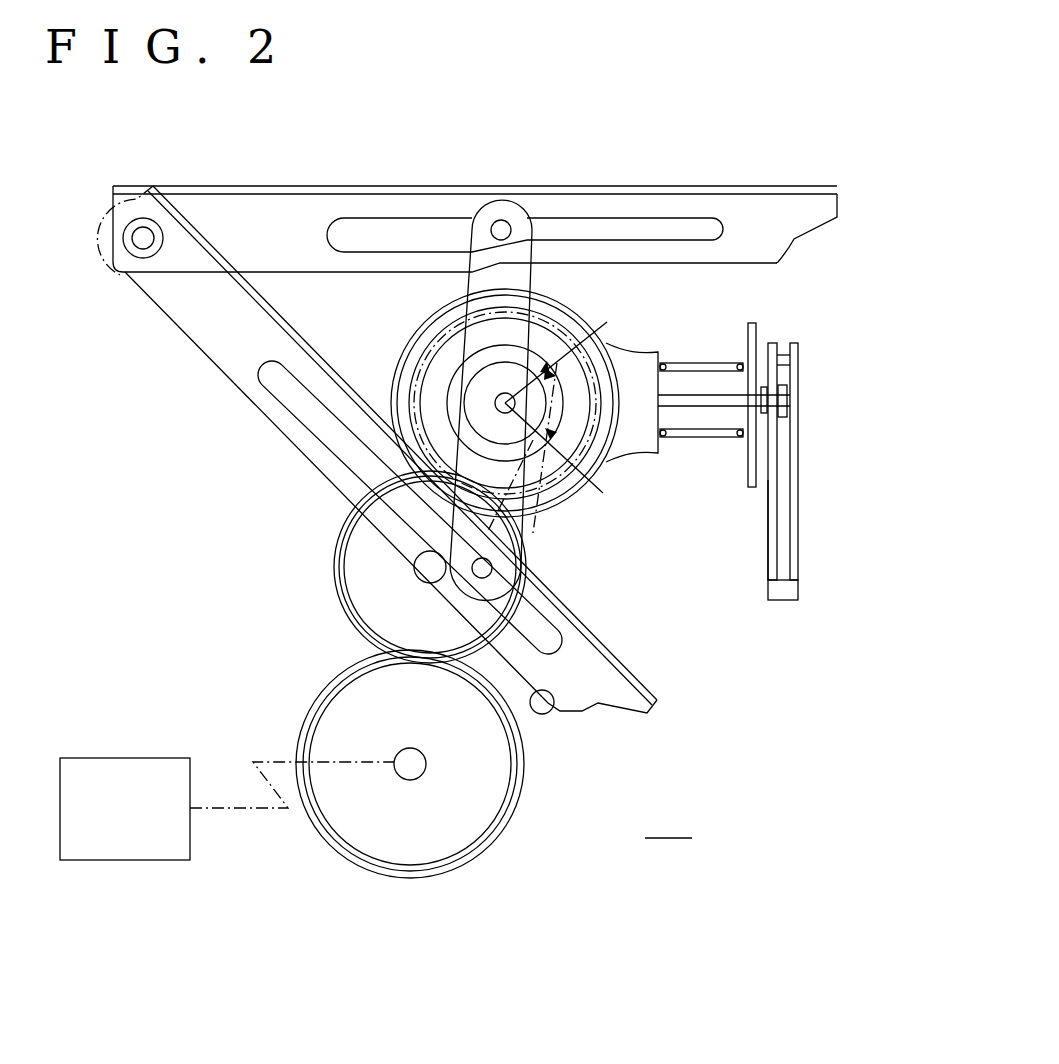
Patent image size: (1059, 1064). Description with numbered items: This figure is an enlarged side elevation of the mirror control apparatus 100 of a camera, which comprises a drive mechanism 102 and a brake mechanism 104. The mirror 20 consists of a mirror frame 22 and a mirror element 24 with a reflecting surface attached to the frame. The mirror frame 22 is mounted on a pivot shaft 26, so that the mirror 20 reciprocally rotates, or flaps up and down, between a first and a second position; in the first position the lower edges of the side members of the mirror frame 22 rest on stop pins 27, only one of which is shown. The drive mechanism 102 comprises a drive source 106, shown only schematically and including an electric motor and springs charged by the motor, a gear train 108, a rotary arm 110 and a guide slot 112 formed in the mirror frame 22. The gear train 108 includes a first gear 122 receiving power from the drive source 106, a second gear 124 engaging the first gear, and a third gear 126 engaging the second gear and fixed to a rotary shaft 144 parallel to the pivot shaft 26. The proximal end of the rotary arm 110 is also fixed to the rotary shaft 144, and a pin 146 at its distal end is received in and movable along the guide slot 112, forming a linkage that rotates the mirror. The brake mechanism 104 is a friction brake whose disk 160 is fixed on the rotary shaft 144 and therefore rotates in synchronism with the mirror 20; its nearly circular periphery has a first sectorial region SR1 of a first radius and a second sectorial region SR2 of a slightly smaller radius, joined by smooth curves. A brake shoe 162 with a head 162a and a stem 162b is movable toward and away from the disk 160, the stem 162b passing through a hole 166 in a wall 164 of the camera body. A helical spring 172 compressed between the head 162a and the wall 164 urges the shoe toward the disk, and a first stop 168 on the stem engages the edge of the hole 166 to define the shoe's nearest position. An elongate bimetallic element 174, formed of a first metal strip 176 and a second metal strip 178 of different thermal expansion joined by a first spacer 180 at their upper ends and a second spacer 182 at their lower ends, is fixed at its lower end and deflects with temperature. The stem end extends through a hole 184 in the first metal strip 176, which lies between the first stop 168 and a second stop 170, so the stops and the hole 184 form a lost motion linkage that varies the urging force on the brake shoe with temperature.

The mirror 20 is at (480, 232).
The mirror frame 22 is at (778, 258).
The mirror element 24 is at (663, 186).
The pivot shaft 26 is at (136, 262).
The stop pin 27 is at (548, 714).
The mirror control apparatus 100 is at (668, 821).
The drive mechanism 102 is at (293, 704).
The brake mechanism 104 is at (426, 451).
The drive source 106 is at (147, 862).
The gear train 108 is at (303, 547).
The rotary arm 110 is at (456, 359).
The guide slot 112 is at (608, 226).
The first gear 122 is at (312, 704).
The second gear 124 is at (337, 607).
The third gear 126 is at (491, 426).
The rotary shaft 144 is at (507, 393).
The pin 146 is at (498, 219).
The disk 160 is at (553, 502).
The brake shoe 162 is at (674, 409).
The head 162a is at (643, 352).
The stem 162b is at (686, 437).
The wall 164 is at (759, 332).
The hole 166 is at (768, 343).
The first stop 168 is at (767, 415).
The second stop 170 is at (793, 417).
The helical spring 172 is at (678, 446).
The bimetallic element 174 is at (802, 486).
The first metal strip 176 is at (768, 569).
The second metal strip 178 is at (798, 567).
The first spacer 180 is at (797, 343).
The second spacer 182 is at (788, 600).
The hole 184 is at (787, 398).
The first sectorial region SR1 is at (600, 470).
The second sectorial region SR2 is at (420, 393).